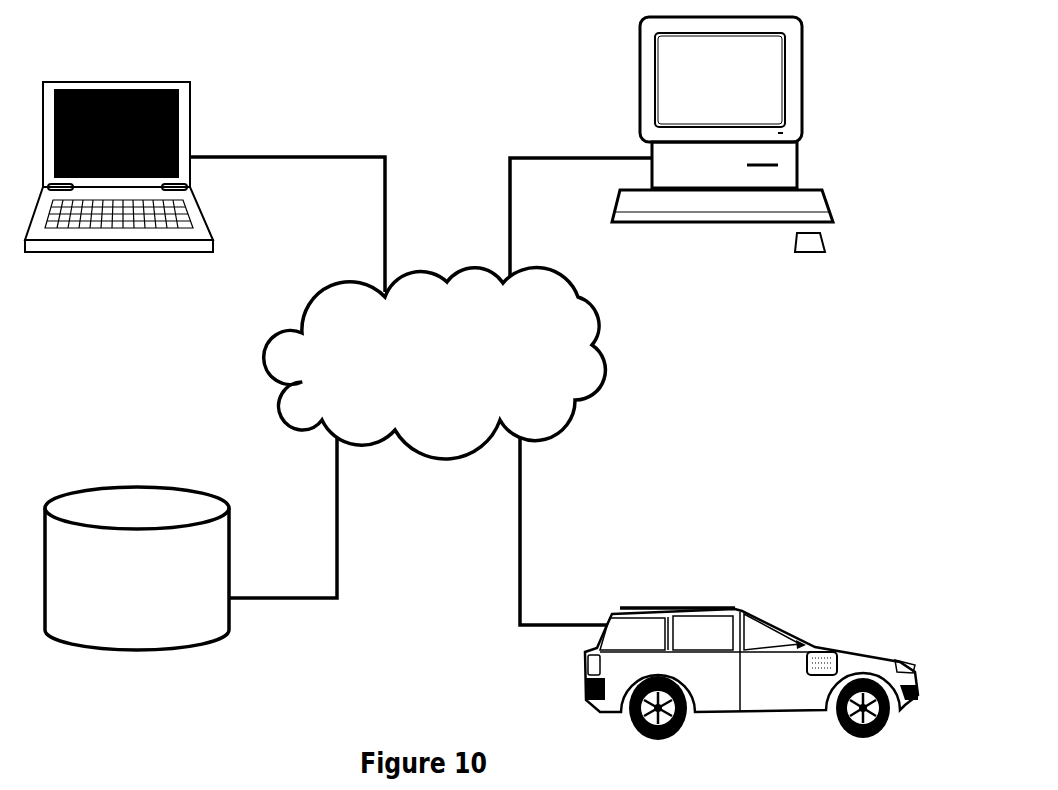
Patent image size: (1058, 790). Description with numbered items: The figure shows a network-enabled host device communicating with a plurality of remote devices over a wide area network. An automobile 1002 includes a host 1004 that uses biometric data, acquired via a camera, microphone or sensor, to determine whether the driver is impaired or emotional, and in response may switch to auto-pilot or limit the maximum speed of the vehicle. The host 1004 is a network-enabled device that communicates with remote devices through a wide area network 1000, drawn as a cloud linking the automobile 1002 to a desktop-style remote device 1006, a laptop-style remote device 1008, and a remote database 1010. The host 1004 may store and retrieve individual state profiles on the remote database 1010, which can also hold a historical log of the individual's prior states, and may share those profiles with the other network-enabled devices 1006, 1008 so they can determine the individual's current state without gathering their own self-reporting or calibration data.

The wide area network 1000 is at (435, 363).
The automobile 1002 is at (742, 604).
The host 1004 is at (823, 647).
The remote device 1006 is at (722, 134).
The remote device 1008 is at (122, 78).
The remote database 1010 is at (138, 478).